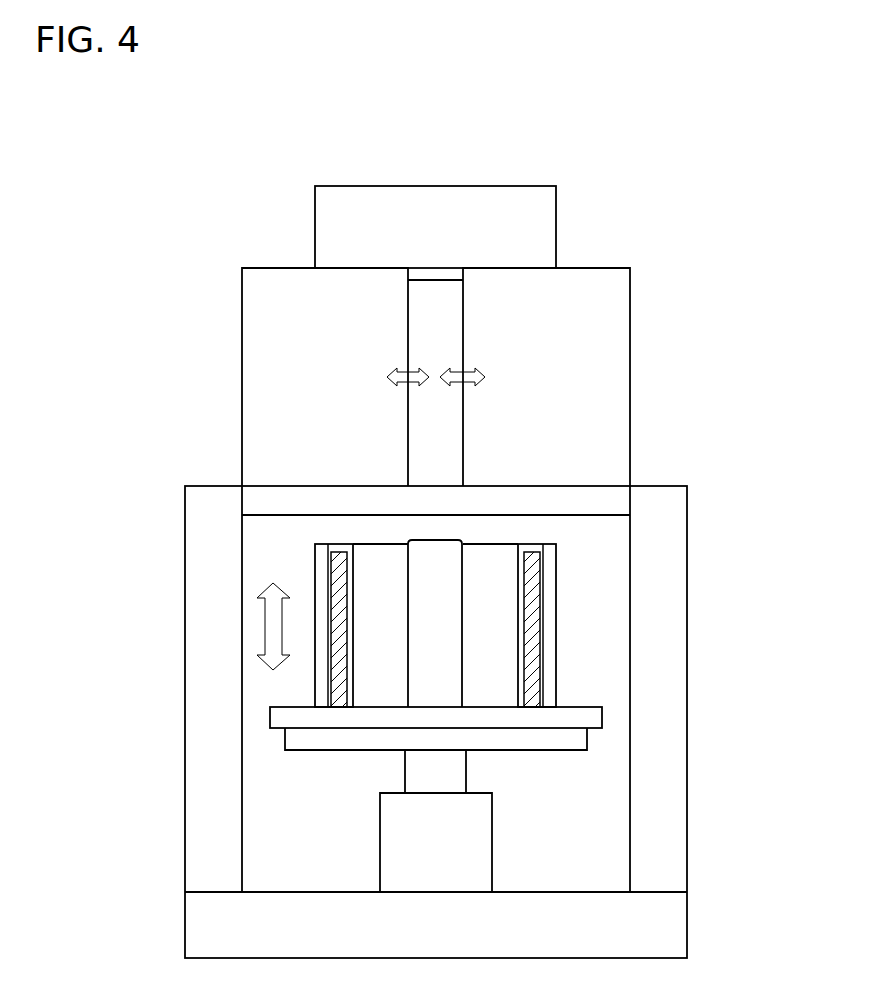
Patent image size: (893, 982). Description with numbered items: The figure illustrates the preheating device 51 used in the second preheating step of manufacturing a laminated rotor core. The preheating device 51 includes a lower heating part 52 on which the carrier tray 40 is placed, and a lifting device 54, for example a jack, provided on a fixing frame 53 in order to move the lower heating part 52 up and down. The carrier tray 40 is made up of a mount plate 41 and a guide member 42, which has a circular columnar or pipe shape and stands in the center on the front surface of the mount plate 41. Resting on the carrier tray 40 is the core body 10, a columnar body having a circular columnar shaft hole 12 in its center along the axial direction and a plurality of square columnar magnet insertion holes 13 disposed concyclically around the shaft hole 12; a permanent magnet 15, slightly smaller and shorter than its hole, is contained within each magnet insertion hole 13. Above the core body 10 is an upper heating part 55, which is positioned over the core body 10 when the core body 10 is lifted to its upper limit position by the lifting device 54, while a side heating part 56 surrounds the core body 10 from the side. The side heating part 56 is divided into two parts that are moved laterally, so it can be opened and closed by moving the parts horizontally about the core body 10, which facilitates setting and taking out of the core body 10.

The core body 10 is at (547, 554).
The shaft hole 12 is at (462, 582).
The magnet insertion holes 13 is at (439, 576).
The permanent magnet 15 is at (343, 593).
The carrier tray 40 is at (441, 781).
The mount plate 41 is at (447, 718).
The guide member 42 is at (460, 673).
The preheating device 51 is at (489, 487).
The lower heating part 52 is at (372, 781).
The fixing frame 53 is at (688, 920).
The lifting device 54 is at (380, 842).
The upper heating part 55 is at (470, 184).
The side heating part 56 is at (638, 289).